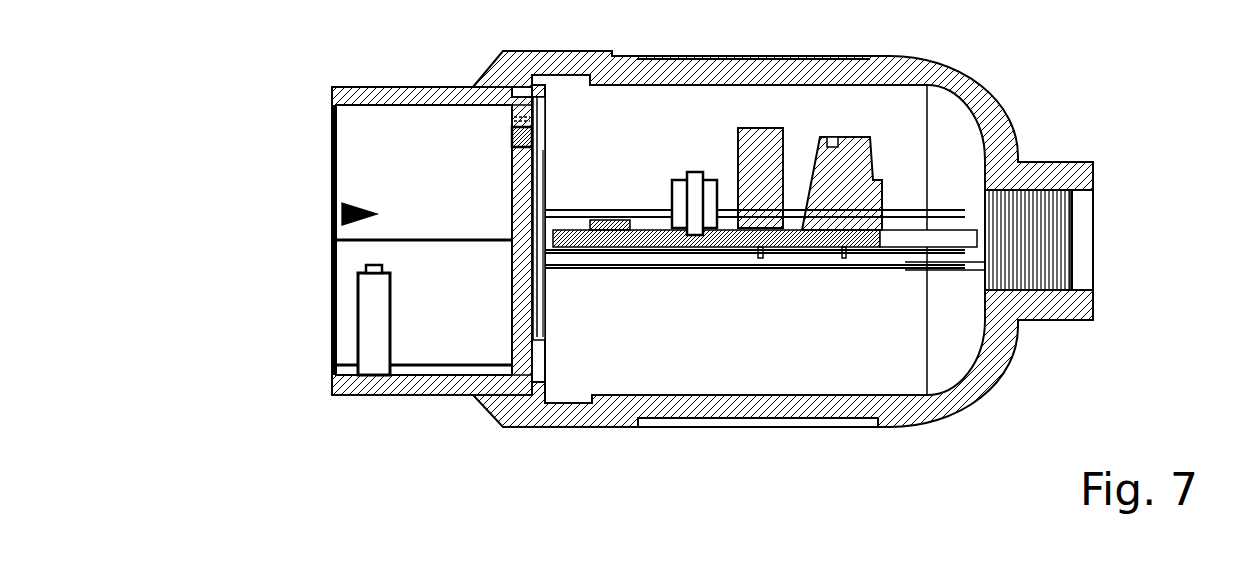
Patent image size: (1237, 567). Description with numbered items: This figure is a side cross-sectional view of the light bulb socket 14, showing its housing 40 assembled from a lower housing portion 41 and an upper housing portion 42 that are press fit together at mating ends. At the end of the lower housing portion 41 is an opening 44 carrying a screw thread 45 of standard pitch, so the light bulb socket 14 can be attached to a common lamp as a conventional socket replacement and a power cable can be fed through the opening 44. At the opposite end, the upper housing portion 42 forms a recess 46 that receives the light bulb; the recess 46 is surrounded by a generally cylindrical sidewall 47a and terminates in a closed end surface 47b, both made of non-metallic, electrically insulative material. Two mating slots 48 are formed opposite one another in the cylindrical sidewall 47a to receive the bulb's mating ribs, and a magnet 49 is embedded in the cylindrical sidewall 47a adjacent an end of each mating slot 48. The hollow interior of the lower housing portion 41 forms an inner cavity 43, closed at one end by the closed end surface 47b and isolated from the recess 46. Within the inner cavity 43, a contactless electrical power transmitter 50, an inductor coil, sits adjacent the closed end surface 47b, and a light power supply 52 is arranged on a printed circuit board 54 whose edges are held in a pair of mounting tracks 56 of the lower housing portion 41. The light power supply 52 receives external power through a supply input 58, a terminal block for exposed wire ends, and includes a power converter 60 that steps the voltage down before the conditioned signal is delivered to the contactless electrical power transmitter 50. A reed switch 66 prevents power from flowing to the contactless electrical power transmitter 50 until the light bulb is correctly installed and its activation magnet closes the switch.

The light bulb socket 14 is at (345, 458).
The housing 40 is at (837, 260).
The lower housing portion 41 is at (783, 213).
The upper housing portion 42 is at (365, 222).
The inner cavity 43 is at (952, 126).
The opening 44 is at (1100, 222).
The screw thread 45 is at (1075, 262).
The recess 46 is at (345, 212).
The cylindrical sidewall 47a is at (330, 178).
The closed end surface 47b is at (515, 205).
The mating slot 48 is at (370, 352).
The magnet 49 is at (368, 264).
The contactless electrical power transmitter 50 is at (548, 162).
The light power supply 52 is at (768, 192).
The printed circuit board 54 is at (652, 250).
The mounting track 56 is at (905, 270).
The supply input 58 is at (848, 148).
The power converter 60 is at (697, 180).
The reed switch 66 is at (512, 138).